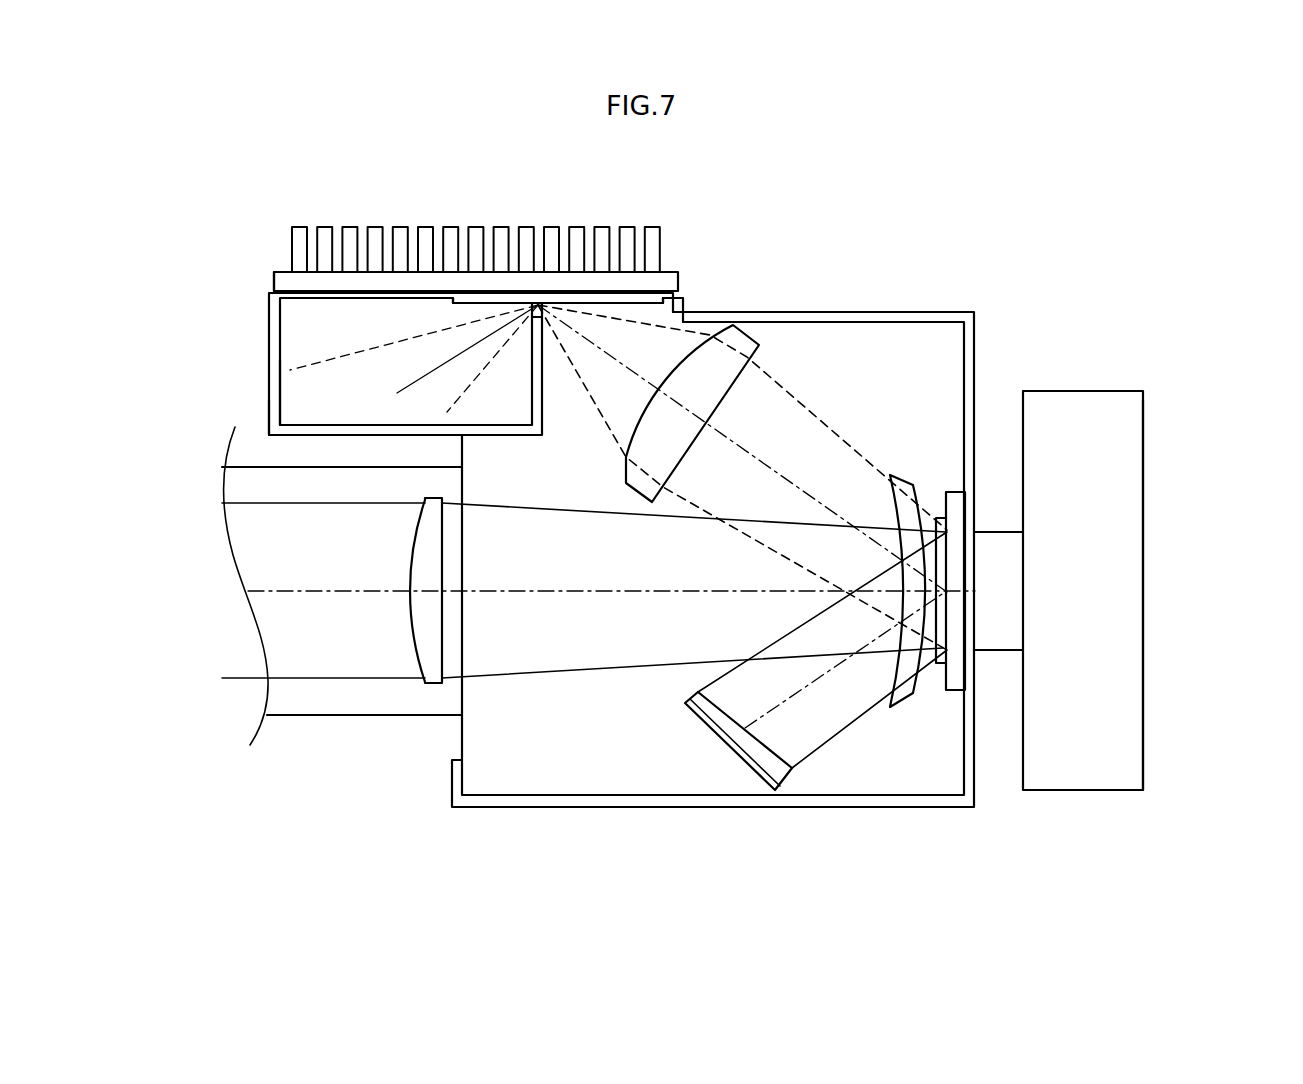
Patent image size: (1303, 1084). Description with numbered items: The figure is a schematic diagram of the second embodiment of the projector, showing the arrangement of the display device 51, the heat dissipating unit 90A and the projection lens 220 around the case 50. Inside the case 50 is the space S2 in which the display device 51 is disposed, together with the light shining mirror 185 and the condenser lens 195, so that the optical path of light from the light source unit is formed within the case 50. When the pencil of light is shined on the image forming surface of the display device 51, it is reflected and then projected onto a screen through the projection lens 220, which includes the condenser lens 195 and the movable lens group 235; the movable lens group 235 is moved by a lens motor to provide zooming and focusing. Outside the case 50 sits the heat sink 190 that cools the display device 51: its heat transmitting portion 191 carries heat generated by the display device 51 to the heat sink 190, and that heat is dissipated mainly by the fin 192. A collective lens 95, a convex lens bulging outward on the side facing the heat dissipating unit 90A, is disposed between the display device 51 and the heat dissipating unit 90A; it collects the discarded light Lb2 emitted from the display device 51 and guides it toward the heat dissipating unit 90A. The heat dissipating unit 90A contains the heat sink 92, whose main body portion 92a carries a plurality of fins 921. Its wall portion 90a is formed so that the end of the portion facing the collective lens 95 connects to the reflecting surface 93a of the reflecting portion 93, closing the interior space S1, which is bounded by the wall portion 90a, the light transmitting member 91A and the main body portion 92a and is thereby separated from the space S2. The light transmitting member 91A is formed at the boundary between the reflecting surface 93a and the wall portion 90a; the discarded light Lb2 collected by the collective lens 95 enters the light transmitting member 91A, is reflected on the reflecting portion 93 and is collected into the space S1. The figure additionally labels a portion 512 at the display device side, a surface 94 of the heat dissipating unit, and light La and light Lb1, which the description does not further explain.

The case 50 is at (966, 300).
The display device 51 is at (1093, 645).
The light transmitting portion 512 is at (938, 573).
The heat dissipating unit 90A is at (257, 312).
The wall portion 90a is at (270, 401).
The light transmitting member 91A is at (539, 304).
The heat sink 92 is at (469, 212).
The main body portion 92a is at (273, 283).
The fins 921 is at (661, 233).
The reflecting portion 93 is at (467, 296).
The reflecting surface 93a is at (467, 306).
The inner wall surface 94 is at (282, 382).
The collective lens 95 is at (747, 343).
The light shining mirror 185 is at (732, 755).
The heat sink 190 is at (1112, 543).
The heat transmitting portion 191 is at (1005, 625).
The fin 192 is at (1145, 433).
The condenser lens 195 is at (897, 707).
The projection lens 220 is at (311, 729).
The movable lens group 235 is at (414, 700).
The space S1 is at (294, 349).
The space S2 is at (957, 355).
The image light La is at (838, 737).
The detection light Lb1 is at (581, 678).
The discarded light Lb2 is at (820, 415).